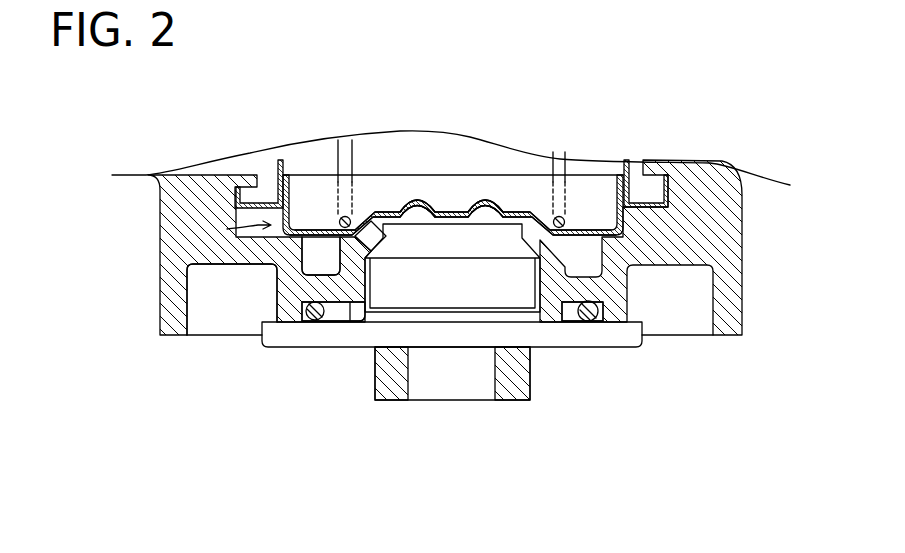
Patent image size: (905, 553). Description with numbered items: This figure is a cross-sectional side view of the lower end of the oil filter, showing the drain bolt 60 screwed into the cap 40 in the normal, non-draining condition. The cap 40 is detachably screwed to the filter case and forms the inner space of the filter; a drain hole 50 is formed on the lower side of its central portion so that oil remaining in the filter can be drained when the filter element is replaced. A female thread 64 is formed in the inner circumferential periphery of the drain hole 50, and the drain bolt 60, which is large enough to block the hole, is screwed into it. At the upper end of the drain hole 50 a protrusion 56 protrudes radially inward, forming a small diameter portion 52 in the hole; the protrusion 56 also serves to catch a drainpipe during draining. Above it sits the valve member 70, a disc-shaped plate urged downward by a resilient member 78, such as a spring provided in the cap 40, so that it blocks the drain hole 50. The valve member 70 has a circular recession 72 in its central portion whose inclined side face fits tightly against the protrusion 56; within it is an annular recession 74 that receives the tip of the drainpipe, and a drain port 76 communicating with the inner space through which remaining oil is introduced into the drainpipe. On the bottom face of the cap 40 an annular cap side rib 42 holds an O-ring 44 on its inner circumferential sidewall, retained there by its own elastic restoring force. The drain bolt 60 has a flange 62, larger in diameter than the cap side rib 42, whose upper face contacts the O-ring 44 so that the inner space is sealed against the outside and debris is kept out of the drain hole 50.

The cap 40 is at (742, 228).
The cap side rib 42 is at (288, 312).
The O-ring 44 is at (588, 313).
The drain hole 50 is at (368, 275).
The small diameter portion 52 is at (448, 214).
The protrusion 56 is at (370, 216).
The drain bolt 60 is at (452, 296).
The flange 62 is at (288, 338).
The female thread 64 is at (527, 283).
The valve member 70 is at (227, 229).
The circular recession 72 is at (277, 161).
The annular recession 74 is at (417, 203).
The drain port 76 is at (587, 232).
The resilient member 78 is at (537, 216).